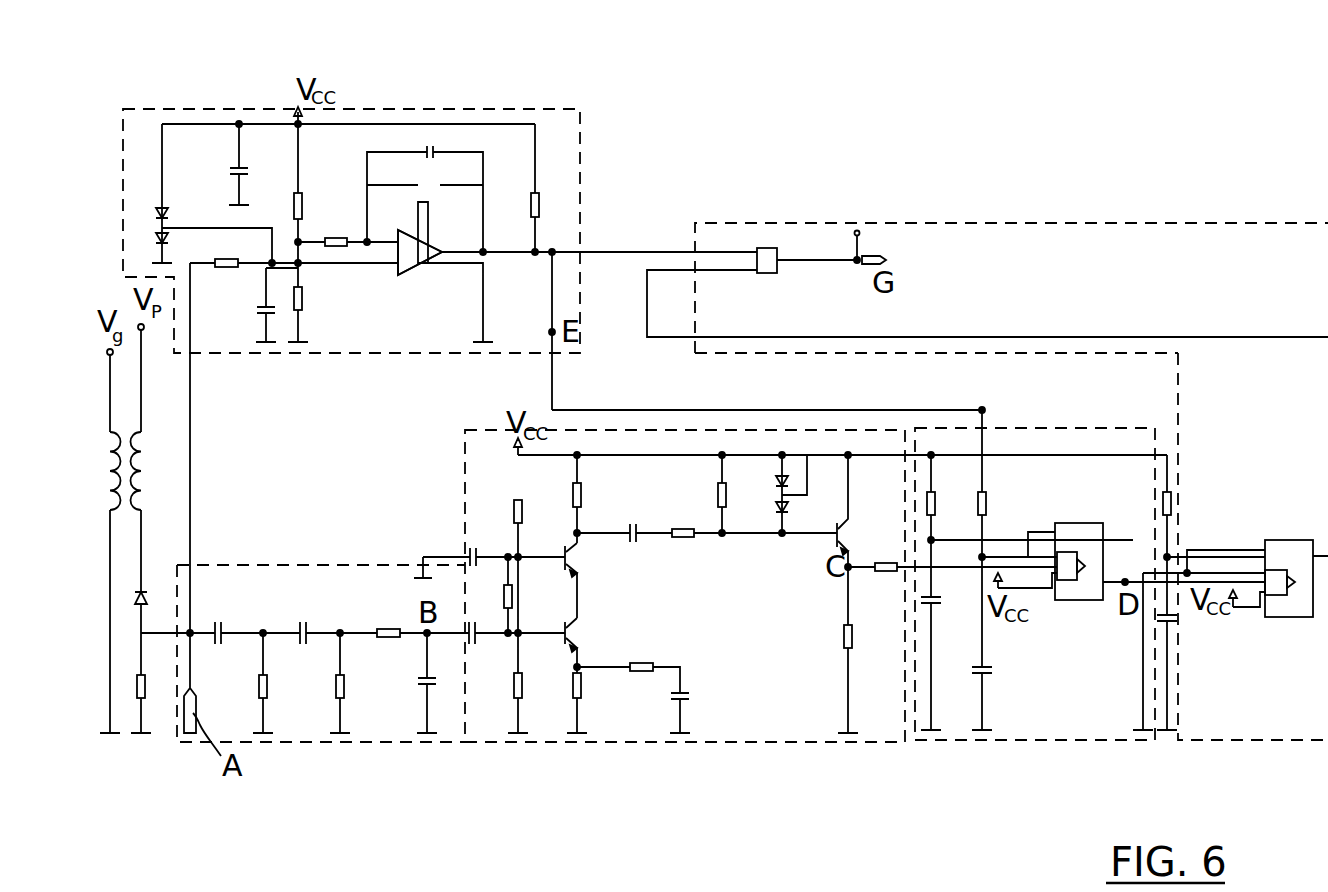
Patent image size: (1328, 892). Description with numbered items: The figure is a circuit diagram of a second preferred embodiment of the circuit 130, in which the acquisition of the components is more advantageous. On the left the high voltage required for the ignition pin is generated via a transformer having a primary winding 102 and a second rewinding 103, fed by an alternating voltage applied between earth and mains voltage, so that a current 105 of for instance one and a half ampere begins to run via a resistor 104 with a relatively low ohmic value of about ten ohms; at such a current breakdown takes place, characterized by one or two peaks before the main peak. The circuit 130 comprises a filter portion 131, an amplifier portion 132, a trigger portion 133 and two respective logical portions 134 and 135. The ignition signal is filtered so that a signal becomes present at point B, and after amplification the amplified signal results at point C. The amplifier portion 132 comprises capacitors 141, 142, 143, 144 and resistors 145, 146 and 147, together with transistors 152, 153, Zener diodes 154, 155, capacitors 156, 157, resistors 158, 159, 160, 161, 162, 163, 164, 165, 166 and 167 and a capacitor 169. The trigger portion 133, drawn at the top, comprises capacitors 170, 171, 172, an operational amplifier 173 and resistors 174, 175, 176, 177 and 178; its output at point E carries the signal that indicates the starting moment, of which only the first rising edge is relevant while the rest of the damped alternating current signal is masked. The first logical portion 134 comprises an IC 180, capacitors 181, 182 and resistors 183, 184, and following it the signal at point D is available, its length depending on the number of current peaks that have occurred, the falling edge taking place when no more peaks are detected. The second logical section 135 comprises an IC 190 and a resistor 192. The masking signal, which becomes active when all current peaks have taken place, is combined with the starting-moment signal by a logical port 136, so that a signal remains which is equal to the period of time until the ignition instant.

The primary winding 102 is at (103, 455).
The second rewinding 103 is at (137, 458).
The resistor 104 is at (146, 688).
The current 105 is at (142, 596).
The circuit 130 is at (767, 104).
The filter portion 131 is at (268, 788).
The amplifier portion 132 is at (798, 765).
The trigger portion 133 is at (546, 106).
The first logical portion 134 is at (1065, 760).
The second logical portion 135 is at (1240, 703).
The logical port 136 is at (765, 248).
The capacitor 141 is at (220, 621).
The capacitor 142 is at (304, 621).
The capacitor 143 is at (475, 648).
The capacitor 144 is at (436, 684).
The resistor 145 is at (268, 688).
The resistor 146 is at (345, 687).
The resistor 147 is at (388, 628).
The transistor 152 is at (580, 632).
The transistor 153 is at (850, 521).
The Zener diode 154 is at (778, 482).
The Zener diode 155 is at (778, 512).
The capacitor 156 is at (634, 544).
The capacitor 157 is at (473, 548).
The resistor 158 is at (514, 505).
The resistor 159 is at (504, 592).
The resistor 160 is at (522, 695).
The resistor 161 is at (582, 692).
The resistor 162 is at (641, 672).
The resistor 163 is at (686, 537).
The resistor 164 is at (581, 494).
The resistor 165 is at (718, 498).
The resistor 166 is at (845, 633).
The resistor 167 is at (887, 570).
The capacitor 169 is at (690, 697).
The capacitor 170 is at (232, 170).
The capacitor 171 is at (430, 146).
The capacitor 172 is at (260, 312).
The operational amplifier 173 is at (410, 256).
The resistor 174 is at (539, 205).
The resistor 175 is at (294, 205).
The resistor 176 is at (336, 238).
The resistor 177 is at (303, 302).
The resistor 178 is at (222, 268).
The IC 180 is at (1072, 600).
The capacitor 181 is at (930, 604).
The capacitor 182 is at (975, 669).
The resistor 183 is at (931, 503).
The resistor 184 is at (985, 505).
The IC 190 is at (1283, 540).
The resistor 192 is at (1172, 503).